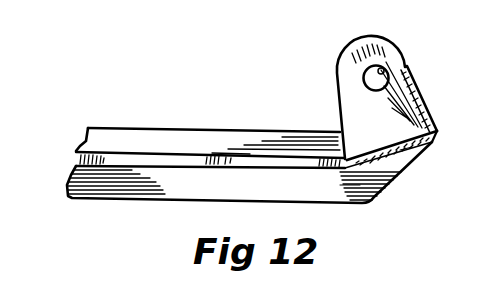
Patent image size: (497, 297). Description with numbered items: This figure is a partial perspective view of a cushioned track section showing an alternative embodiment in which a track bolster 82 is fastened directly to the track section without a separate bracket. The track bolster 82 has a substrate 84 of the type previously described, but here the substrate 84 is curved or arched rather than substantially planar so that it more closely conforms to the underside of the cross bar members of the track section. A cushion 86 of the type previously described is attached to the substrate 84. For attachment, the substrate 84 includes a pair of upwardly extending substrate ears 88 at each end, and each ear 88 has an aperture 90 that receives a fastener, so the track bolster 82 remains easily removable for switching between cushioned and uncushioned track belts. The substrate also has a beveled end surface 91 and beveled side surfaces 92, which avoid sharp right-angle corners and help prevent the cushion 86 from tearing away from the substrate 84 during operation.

The track bolster 82 is at (212, 105).
The substrate 84 is at (116, 134).
The cushion 86 is at (180, 200).
The substrate ears 88 is at (381, 41).
The aperture 90 is at (384, 70).
The beveled end surface 91 is at (406, 165).
The beveled side surfaces 92 is at (327, 190).